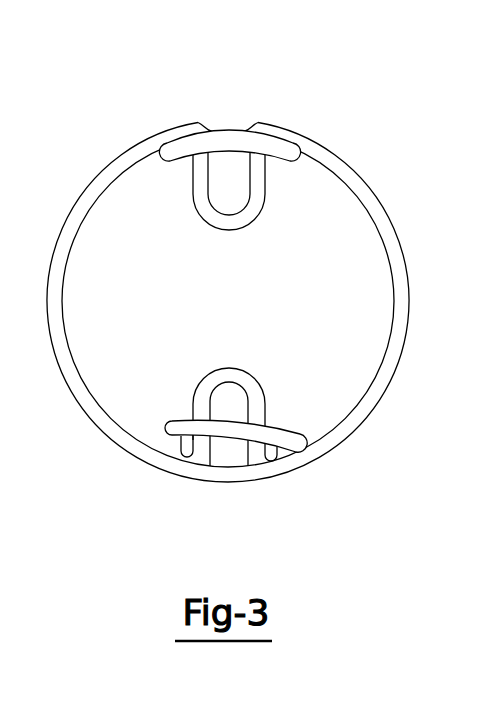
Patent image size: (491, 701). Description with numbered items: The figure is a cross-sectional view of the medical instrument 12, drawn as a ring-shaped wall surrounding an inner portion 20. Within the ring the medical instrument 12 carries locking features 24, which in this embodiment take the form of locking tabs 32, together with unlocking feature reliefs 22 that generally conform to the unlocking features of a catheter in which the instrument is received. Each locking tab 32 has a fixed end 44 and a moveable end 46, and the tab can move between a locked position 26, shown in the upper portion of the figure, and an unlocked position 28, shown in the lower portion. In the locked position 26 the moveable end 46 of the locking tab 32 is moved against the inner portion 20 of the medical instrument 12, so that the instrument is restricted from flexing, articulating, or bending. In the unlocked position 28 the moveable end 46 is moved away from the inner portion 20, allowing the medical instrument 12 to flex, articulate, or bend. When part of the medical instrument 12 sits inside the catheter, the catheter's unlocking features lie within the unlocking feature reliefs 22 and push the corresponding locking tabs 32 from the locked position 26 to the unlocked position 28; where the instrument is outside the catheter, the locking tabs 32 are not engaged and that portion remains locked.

The medical instrument 12 is at (211, 268).
The inner portion 20 is at (70, 247).
The unlocking feature reliefs 22 is at (212, 232).
The locking features 24 is at (226, 298).
The locked position 26 is at (229, 131).
The unlocked position 28 is at (226, 468).
The locking tab 32 is at (226, 298).
The fixed end 44 is at (303, 436).
The moveable end 46 is at (178, 444).